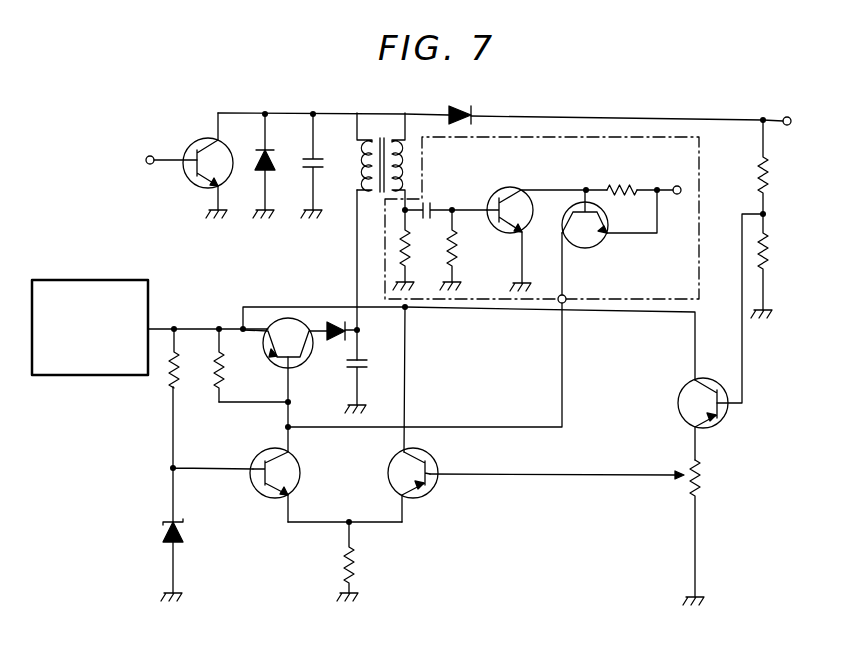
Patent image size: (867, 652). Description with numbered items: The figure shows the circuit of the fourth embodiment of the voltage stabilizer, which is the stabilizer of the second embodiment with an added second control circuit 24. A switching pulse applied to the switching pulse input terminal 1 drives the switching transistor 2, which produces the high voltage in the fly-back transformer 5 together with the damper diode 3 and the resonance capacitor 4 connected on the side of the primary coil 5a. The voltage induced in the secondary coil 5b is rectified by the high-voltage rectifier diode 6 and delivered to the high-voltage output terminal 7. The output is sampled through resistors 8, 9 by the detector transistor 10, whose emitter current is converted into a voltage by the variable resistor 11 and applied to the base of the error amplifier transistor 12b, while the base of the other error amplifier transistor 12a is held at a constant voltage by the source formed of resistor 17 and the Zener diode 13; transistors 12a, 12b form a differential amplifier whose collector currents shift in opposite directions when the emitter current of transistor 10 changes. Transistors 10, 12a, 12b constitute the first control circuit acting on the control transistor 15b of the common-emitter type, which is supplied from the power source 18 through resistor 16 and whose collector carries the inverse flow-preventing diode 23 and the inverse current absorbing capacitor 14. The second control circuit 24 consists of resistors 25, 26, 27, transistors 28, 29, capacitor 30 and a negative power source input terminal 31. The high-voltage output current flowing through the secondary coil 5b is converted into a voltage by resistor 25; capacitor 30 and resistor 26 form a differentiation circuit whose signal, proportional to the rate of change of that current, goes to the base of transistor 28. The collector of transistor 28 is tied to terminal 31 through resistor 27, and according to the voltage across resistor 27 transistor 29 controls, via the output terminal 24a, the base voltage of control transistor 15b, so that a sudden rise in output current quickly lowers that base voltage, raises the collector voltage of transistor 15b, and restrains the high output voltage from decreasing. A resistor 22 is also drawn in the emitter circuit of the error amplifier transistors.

The switching pulse input terminal 1 is at (150, 156).
The switching transistor 2 is at (214, 139).
The damper diode 3 is at (262, 150).
The resonance capacitor 4 is at (309, 161).
The fly-back transformer 5 is at (394, 146).
The primary coil 5a is at (363, 166).
The secondary coil 5b is at (403, 170).
The high-voltage rectifier diode 6 is at (462, 110).
The high-voltage output terminal 7 is at (787, 117).
The resistor 8 is at (769, 172).
The resistor 9 is at (758, 252).
The detector transistor 10 is at (678, 402).
The variable resistor 11 is at (704, 479).
The error amplifier transistor 12a is at (261, 497).
The error amplifier transistor 12b is at (431, 496).
The Zener diode 13 is at (163, 524).
The inverse current absorbing capacitor 14 is at (366, 360).
The control transistor 15b is at (300, 366).
The resistor 16 is at (219, 380).
The resistor 17 is at (173, 382).
The power source 18 is at (110, 280).
The resistor 22 is at (340, 563).
The inverse flow-preventing diode 23 is at (334, 340).
The second control circuit 24 is at (530, 219).
The output terminal 24a is at (566, 296).
The resistor 25 is at (402, 233).
The resistor 26 is at (457, 250).
The resistor 27 is at (626, 181).
The transistor 28 is at (505, 190).
The transistor 29 is at (598, 245).
The capacitor 30 is at (432, 204).
The negative power source input terminal 31 is at (677, 194).